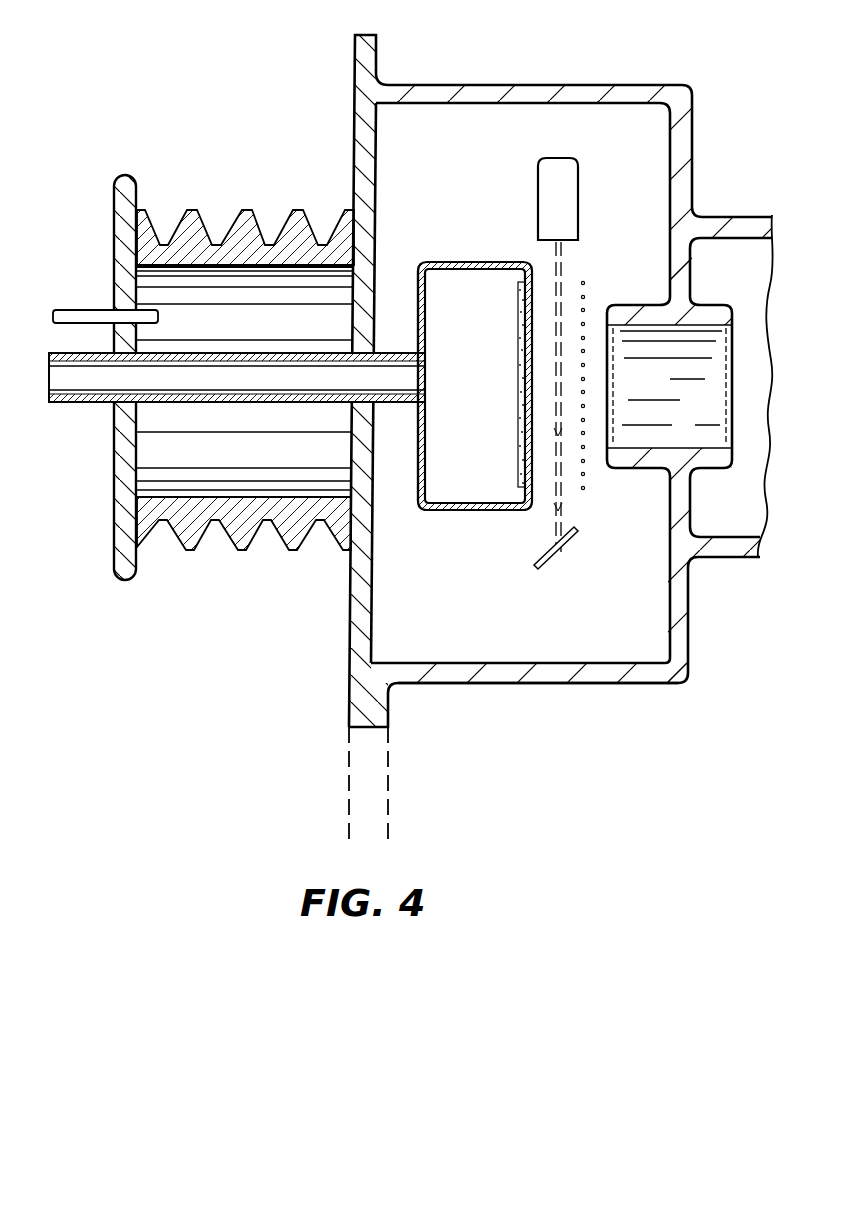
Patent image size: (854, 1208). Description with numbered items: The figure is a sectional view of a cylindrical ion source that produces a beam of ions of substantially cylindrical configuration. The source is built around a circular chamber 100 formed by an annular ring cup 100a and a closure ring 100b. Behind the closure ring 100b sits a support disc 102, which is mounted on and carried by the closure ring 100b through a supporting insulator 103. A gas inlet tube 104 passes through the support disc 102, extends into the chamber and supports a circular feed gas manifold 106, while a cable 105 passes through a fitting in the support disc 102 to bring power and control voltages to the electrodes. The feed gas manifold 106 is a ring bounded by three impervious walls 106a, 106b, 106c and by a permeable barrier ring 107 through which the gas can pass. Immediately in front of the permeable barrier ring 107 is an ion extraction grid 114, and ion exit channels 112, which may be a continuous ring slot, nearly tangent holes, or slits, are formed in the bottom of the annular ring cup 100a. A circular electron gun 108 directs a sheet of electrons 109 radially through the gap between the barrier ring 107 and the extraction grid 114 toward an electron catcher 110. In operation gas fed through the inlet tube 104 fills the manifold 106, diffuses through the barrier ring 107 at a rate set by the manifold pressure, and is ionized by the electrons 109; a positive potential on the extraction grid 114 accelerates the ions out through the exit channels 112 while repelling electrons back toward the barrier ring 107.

The circular chamber 100 is at (483, 130).
The annular ring cup 100a is at (487, 672).
The closure ring 100b is at (353, 621).
The support disc 102 is at (119, 525).
The supporting insulator 103 is at (250, 543).
The gas inlet tube 104 is at (100, 405).
The cable 105 is at (77, 311).
The feed gas manifold 106 is at (463, 262).
The impervious wall 106a is at (500, 269).
The impervious wall 106b is at (426, 340).
The impervious wall 106c is at (463, 503).
The permeable barrier ring 107 is at (518, 378).
The electron gun 108 is at (578, 188).
The sheet of electrons 109 is at (563, 290).
The electron catcher 110 is at (557, 550).
The ion exit channel 112 is at (667, 401).
The ion extraction grid 114 is at (586, 468).